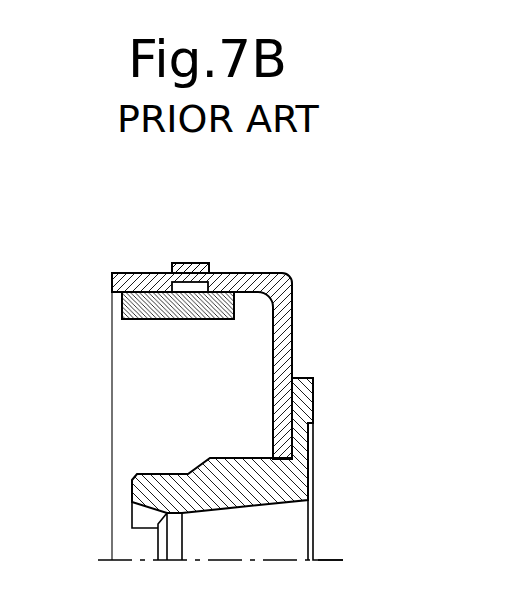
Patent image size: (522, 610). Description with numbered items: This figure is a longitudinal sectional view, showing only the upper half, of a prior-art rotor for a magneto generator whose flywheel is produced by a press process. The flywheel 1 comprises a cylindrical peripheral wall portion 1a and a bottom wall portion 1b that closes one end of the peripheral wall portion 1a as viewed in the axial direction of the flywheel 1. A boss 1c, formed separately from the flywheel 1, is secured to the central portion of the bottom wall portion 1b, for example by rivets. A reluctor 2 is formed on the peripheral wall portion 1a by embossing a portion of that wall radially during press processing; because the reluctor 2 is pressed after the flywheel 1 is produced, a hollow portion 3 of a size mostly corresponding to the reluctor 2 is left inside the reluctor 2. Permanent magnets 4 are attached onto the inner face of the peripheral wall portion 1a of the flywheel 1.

The flywheel 1 is at (244, 324).
The peripheral wall portion 1a is at (143, 286).
The bottom wall portion 1b is at (293, 347).
The boss 1c is at (165, 489).
The reluctor 2 is at (187, 286).
The hollow portion 3 is at (186, 290).
The permanent magnets 4 is at (208, 313).